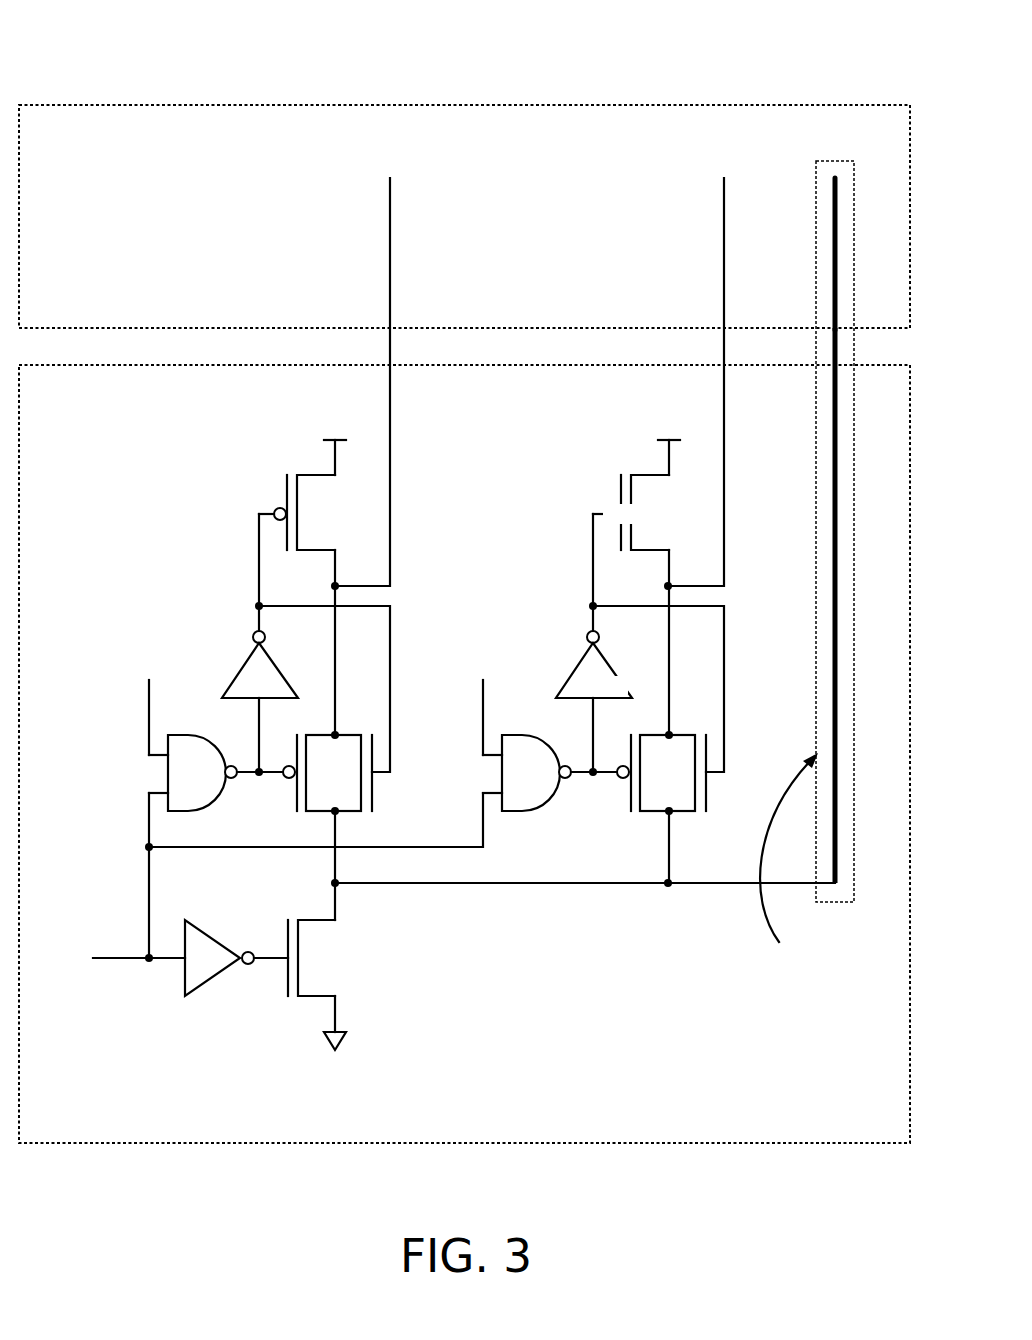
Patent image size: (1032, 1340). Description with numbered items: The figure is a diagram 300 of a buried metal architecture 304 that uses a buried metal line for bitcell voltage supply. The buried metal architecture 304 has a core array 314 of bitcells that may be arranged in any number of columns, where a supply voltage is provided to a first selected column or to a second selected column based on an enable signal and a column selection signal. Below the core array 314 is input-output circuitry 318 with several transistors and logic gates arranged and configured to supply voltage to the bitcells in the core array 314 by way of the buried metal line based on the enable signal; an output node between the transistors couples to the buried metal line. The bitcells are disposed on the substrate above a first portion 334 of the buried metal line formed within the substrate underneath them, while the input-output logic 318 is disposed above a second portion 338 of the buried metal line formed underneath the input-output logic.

The diagram 300 is at (72, 23).
The buried metal architecture 304 is at (598, 51).
The core array 314 is at (209, 143).
The input-output (IO) circuitry 318 is at (237, 405).
The first portion of the buried metal line 334 is at (806, 170).
The second portion of the buried metal line 338 is at (868, 372).